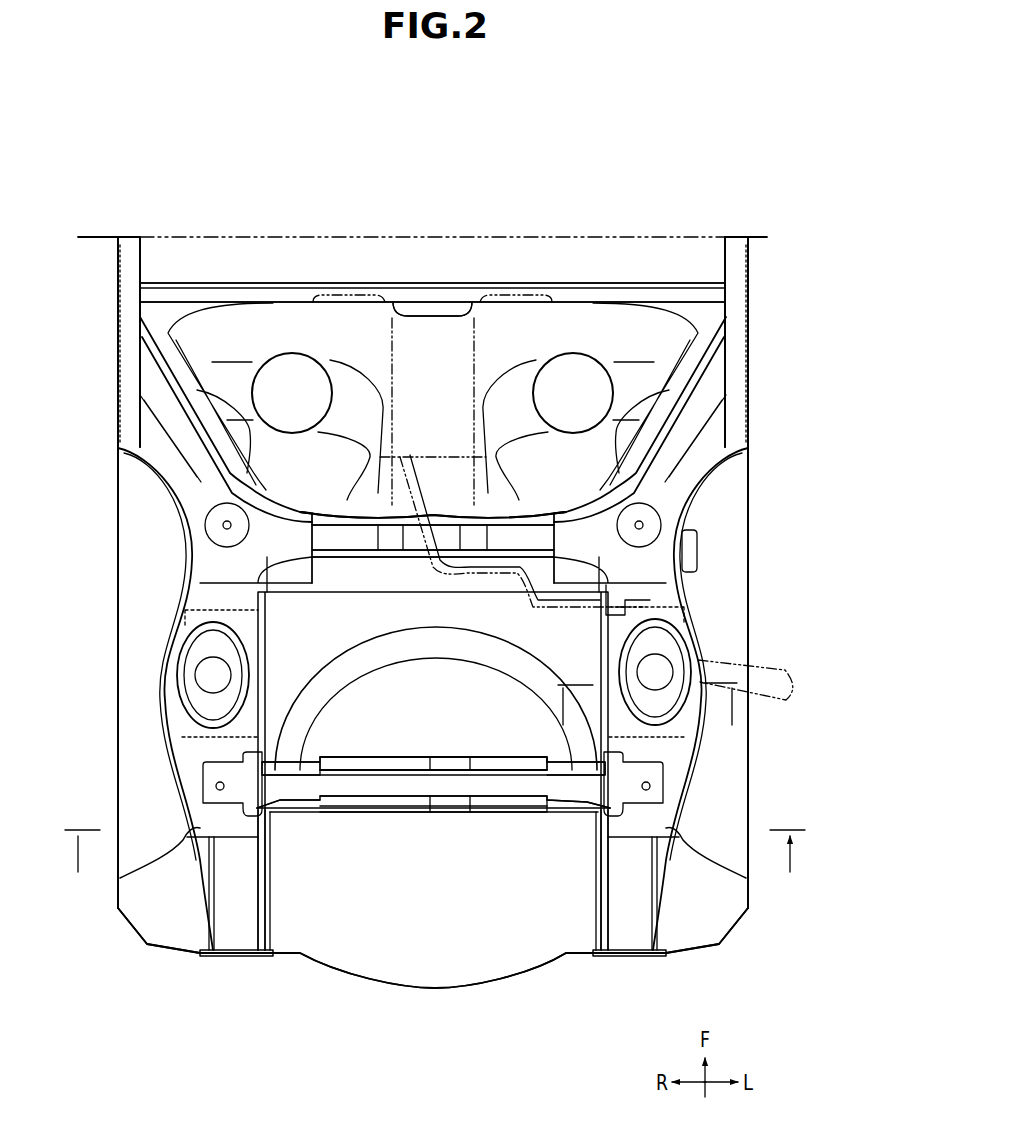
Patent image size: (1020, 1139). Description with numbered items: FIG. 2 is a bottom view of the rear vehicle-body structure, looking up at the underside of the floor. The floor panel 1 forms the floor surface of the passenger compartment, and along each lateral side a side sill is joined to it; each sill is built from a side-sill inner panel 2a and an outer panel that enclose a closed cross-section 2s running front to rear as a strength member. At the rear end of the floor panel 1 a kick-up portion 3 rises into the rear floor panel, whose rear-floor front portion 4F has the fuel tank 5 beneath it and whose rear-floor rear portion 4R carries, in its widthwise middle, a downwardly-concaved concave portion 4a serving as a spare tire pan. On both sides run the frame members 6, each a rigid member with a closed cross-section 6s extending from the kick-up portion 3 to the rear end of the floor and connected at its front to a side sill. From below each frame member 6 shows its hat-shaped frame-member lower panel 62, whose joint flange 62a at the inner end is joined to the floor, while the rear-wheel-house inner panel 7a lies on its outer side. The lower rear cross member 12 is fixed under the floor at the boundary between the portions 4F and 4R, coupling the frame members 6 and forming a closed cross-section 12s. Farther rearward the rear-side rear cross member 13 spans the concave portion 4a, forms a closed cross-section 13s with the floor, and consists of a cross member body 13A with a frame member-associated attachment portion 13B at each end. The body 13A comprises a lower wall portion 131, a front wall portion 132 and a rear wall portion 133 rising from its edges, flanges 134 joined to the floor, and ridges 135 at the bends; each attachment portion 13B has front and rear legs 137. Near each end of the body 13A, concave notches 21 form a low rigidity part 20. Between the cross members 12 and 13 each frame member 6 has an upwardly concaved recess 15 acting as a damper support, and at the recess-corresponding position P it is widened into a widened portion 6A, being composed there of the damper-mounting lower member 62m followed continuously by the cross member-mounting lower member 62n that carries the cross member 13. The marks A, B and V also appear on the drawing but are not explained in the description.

The floor panel 1 is at (237, 250).
The side-sill inner panel 2a is at (118, 302).
The closed cross-section 2s is at (126, 345).
The kick-up portion 3 is at (287, 283).
The rear-floor front portion 4F is at (591, 300).
The rear-floor rear portion 4R is at (360, 975).
The concave portion 4a is at (480, 668).
The fuel tank 5 is at (432, 312).
The rear side frame (frame member) 6 is at (206, 909).
The widened portion 6A is at (165, 670).
The closed cross-section 6s is at (216, 867).
The frame-member lower panel 62 is at (205, 934).
The joint flange 62a is at (265, 935).
The damper-mounting lower member 62m is at (182, 603).
The cross member-mounting lower member 62n is at (150, 860).
The rear-wheel-house inner panel 7a is at (118, 448).
The lower rear cross member 12 is at (441, 510).
The closed cross-section 12s is at (352, 540).
The rear-side rear cross member 13 is at (365, 822).
The cross member body 13A is at (398, 752).
The frame member-associated attachment portion 13B is at (207, 785).
The closed cross-section 13s is at (384, 803).
The lower wall portion 131 is at (479, 768).
The front wall portion 132 is at (441, 766).
The rear wall portion 133 is at (453, 810).
The flange 134 is at (403, 766).
The ridge 135 is at (490, 765).
The leg 137 is at (285, 832).
The recess 15 is at (196, 696).
The low rigidity part 20 is at (285, 802).
The concave notch 21 is at (328, 758).
The section line A is at (647, 716).
The section line B is at (434, 855).
The recess-corresponding position P is at (125, 724).
The vehicle V is at (678, 198).